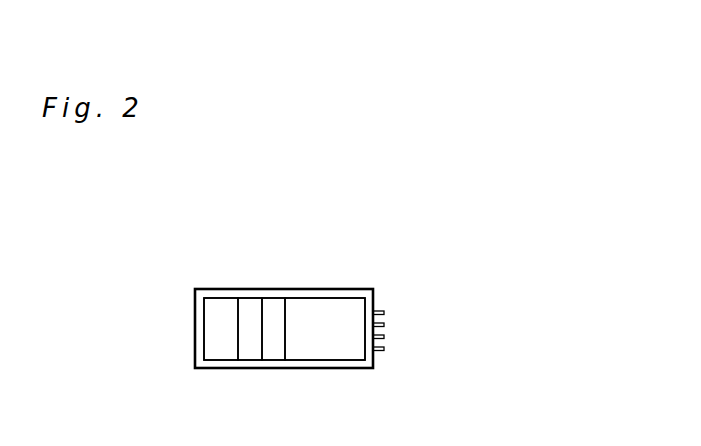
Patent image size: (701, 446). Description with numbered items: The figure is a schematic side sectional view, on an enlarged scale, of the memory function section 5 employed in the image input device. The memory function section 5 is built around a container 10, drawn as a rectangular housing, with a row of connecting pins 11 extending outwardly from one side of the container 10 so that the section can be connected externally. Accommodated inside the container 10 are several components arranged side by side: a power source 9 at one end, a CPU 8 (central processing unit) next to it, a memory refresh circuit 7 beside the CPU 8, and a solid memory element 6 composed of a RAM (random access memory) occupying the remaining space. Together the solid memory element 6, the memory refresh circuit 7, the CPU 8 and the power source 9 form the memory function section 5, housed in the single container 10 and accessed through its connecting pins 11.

The memory function section 5 is at (325, 237).
The solid memory element 6 is at (344, 347).
The memory refresh circuit 7 is at (273, 308).
The CPU 8 is at (250, 307).
The power source 9 is at (220, 307).
The container 10 is at (340, 295).
The connecting pins 11 is at (378, 309).